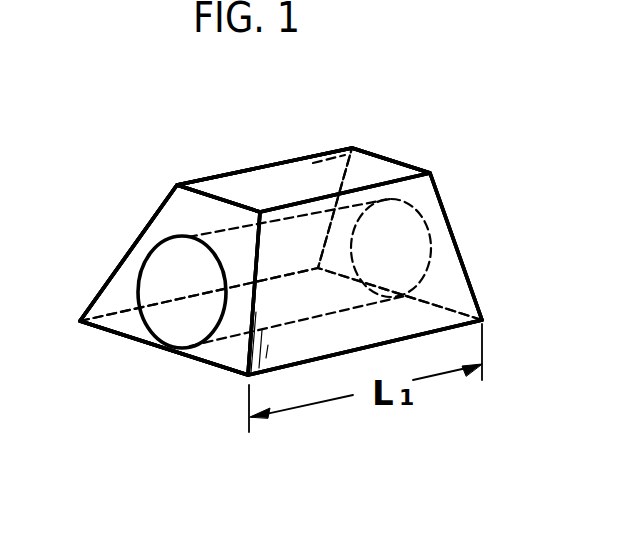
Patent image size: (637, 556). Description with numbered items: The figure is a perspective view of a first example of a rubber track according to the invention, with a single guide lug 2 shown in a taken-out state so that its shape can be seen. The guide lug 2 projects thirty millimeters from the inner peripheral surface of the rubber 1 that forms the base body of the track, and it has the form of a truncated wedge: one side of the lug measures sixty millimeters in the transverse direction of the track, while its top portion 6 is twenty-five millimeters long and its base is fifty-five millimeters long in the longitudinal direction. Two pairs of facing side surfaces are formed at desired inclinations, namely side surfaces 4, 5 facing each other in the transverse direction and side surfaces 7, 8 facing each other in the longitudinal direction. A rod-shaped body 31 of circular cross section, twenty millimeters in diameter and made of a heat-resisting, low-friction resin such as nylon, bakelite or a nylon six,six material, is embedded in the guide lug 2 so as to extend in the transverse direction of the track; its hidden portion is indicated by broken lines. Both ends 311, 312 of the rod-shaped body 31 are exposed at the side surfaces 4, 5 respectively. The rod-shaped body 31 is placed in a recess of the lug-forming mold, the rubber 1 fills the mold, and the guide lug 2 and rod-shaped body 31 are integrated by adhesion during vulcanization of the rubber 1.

The rubber 1 is at (384, 488).
The guide lug 2 is at (432, 155).
The side surface 4 is at (122, 288).
The side surface 5 is at (447, 277).
The top portion 6 is at (232, 185).
The side surface 7 is at (178, 220).
The side surface 8 is at (440, 312).
The rod-shaped body 31 is at (302, 253).
The end of rod-shaped body 311 is at (160, 318).
The end of rod-shaped body 312 is at (428, 238).